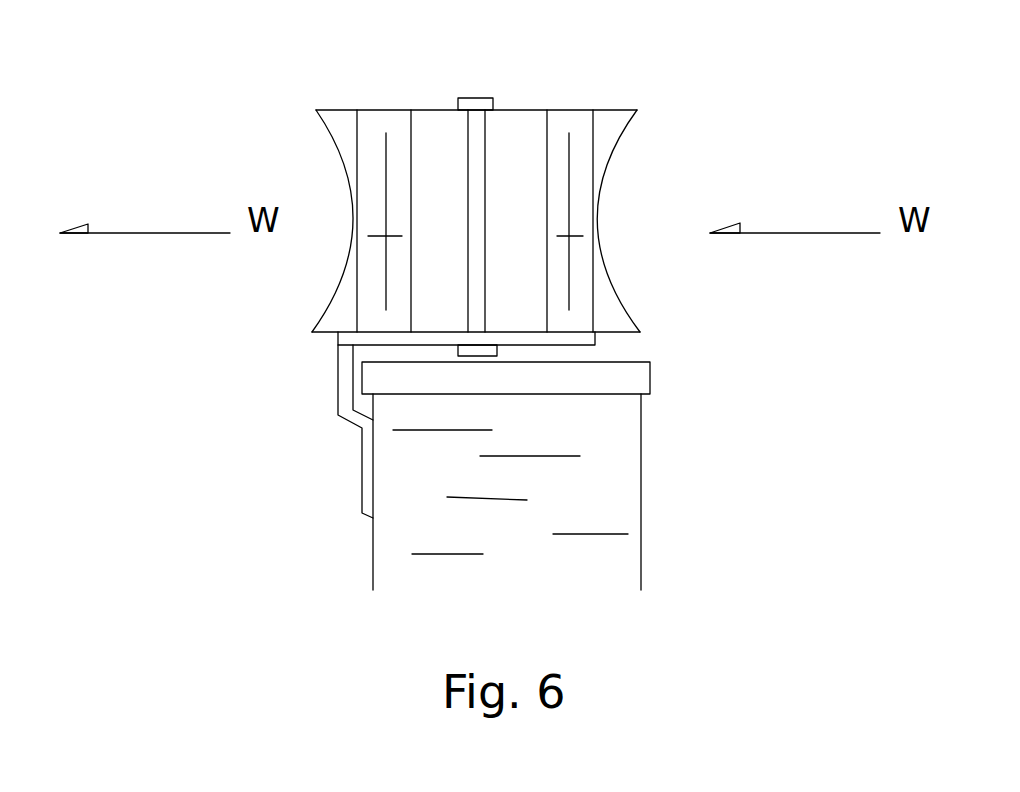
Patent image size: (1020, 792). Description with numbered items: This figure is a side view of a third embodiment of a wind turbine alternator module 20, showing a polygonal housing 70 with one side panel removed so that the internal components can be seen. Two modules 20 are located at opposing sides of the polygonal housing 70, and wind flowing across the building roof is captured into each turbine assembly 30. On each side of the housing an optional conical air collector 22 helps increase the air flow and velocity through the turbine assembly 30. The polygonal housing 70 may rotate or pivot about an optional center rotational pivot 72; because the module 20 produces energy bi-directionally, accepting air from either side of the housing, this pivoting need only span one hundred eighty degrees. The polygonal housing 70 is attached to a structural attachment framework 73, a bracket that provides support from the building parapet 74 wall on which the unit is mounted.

The wind turbine alternator module 20 is at (355, 150).
The conical air collector 22 is at (352, 250).
The turbine assembly 30 is at (378, 225).
The polygonal housing 70 is at (400, 100).
The rotational pivot 72 is at (482, 102).
The structural attachment framework 73 is at (345, 375).
The parapet 74 is at (623, 483).